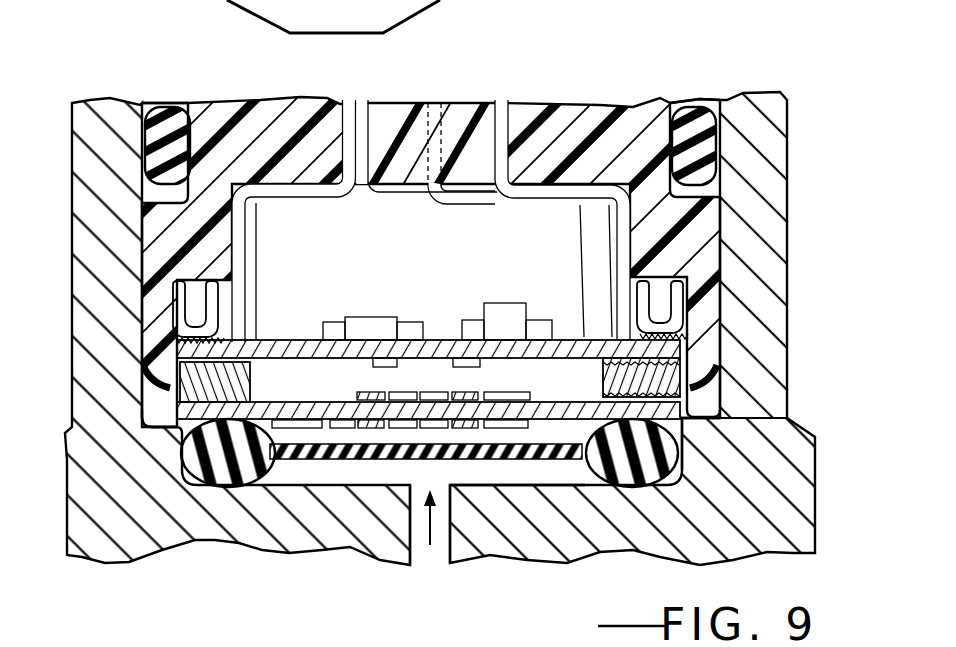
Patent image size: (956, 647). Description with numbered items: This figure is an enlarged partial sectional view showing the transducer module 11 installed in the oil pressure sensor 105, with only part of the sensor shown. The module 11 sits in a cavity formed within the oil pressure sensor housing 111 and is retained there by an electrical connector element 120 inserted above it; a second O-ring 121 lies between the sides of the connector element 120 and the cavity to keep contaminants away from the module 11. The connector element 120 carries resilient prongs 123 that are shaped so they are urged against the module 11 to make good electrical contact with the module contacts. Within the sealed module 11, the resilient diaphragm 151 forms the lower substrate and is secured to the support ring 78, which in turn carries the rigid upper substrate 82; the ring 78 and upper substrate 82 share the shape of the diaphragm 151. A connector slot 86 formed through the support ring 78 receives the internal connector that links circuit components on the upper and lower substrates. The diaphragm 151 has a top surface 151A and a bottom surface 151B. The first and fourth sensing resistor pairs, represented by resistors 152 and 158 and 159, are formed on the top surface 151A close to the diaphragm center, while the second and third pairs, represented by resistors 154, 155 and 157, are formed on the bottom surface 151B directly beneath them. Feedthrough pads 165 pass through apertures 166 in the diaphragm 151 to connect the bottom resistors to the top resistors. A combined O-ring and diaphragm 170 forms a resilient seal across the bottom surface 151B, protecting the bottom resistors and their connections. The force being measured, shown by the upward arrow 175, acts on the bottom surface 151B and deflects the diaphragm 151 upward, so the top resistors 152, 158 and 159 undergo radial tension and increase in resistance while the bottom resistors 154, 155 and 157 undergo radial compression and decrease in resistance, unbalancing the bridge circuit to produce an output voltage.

The oil pressure sensor 105 is at (792, 74).
The electrical connector element 120 is at (645, 104).
The second O-ring 121 is at (707, 148).
The resilient prongs 123 is at (254, 237).
The transducer module 11 is at (418, 282).
The connector slot 86 is at (235, 372).
The first sensing resistor pair 152 is at (447, 350).
The upper substrate 82 is at (432, 396).
The fourth sensing resistor pair 158 is at (490, 393).
The feedthrough pads 165 is at (175, 410).
The fourth sensing resistor pair 159 is at (360, 392).
The support ring 78 is at (604, 378).
The resilient diaphragm 151 is at (667, 420).
The top surface of diaphragm 151A is at (533, 470).
The bottom surface of diaphragm 151B is at (657, 477).
The oil pressure sensor housing 111 is at (797, 540).
The combined O-ring and diaphragm 170 is at (223, 468).
The apertures 166 is at (290, 460).
The second sensing resistor pair 155 is at (373, 423).
The force 175 is at (417, 558).
The third sensing resistor pair 157 is at (478, 425).
The second sensing resistor pair 154 is at (505, 458).